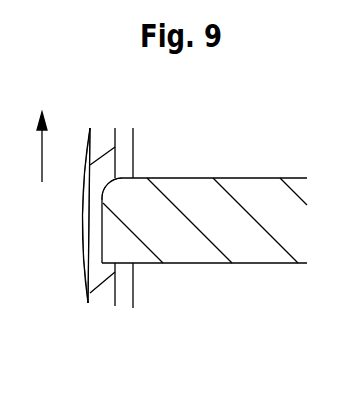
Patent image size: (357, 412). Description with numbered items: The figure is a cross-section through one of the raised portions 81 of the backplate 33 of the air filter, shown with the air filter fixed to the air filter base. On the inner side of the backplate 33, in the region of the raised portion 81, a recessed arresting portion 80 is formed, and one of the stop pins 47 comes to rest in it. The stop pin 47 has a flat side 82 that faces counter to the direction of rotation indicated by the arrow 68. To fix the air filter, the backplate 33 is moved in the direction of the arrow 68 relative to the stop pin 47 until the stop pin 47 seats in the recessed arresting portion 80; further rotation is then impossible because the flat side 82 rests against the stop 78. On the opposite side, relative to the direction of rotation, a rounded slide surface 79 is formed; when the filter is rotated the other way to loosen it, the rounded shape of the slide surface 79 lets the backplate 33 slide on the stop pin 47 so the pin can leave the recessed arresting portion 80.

The stop pin 47 is at (140, 193).
The flat side 82 is at (238, 265).
The slide surface 79 is at (113, 181).
The stop 78 is at (108, 265).
The backplate 33 is at (107, 292).
The raised portion 81 is at (80, 217).
The recessed arresting portion 80 is at (104, 233).
The arrow 68 is at (31, 147).